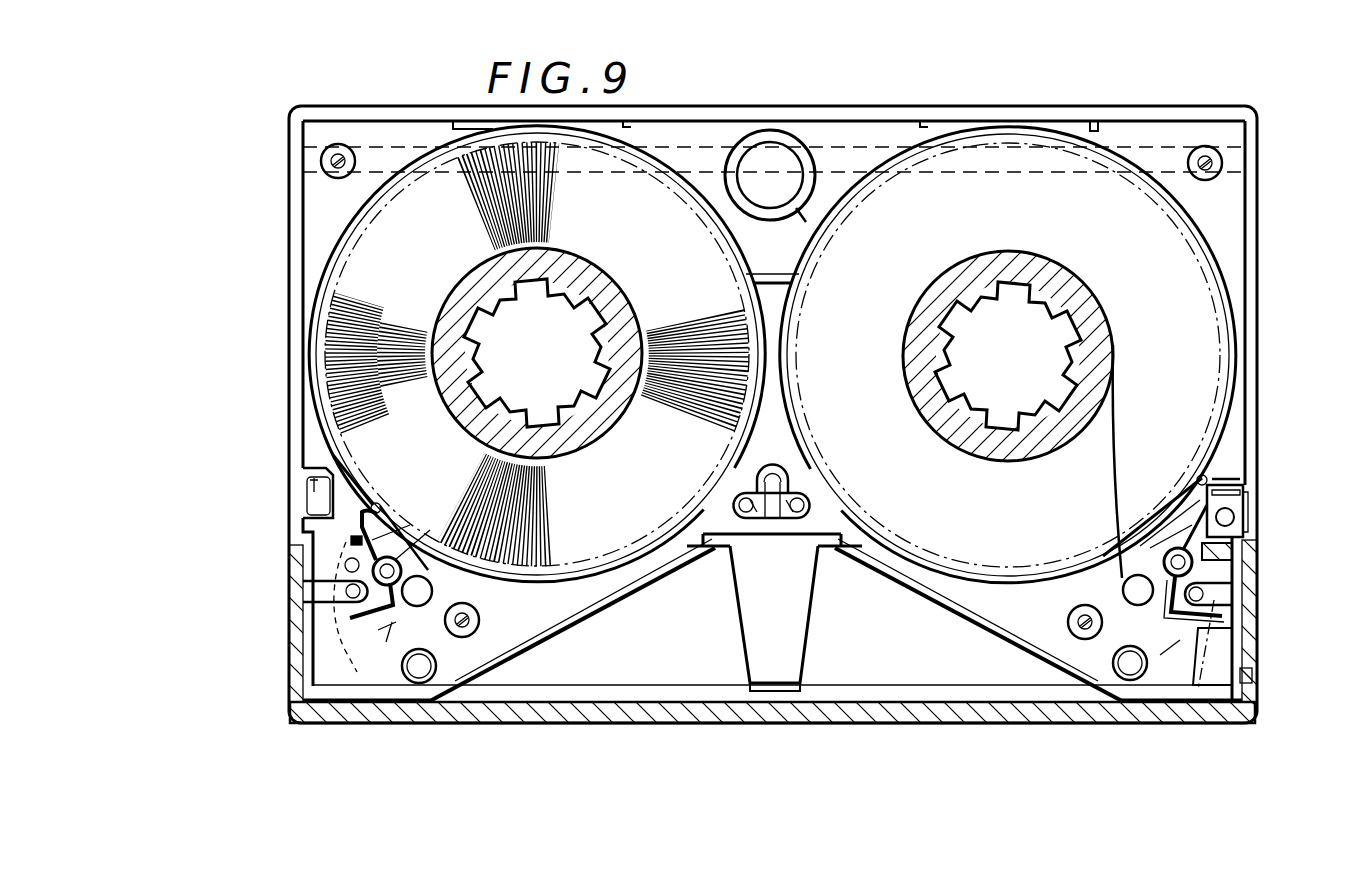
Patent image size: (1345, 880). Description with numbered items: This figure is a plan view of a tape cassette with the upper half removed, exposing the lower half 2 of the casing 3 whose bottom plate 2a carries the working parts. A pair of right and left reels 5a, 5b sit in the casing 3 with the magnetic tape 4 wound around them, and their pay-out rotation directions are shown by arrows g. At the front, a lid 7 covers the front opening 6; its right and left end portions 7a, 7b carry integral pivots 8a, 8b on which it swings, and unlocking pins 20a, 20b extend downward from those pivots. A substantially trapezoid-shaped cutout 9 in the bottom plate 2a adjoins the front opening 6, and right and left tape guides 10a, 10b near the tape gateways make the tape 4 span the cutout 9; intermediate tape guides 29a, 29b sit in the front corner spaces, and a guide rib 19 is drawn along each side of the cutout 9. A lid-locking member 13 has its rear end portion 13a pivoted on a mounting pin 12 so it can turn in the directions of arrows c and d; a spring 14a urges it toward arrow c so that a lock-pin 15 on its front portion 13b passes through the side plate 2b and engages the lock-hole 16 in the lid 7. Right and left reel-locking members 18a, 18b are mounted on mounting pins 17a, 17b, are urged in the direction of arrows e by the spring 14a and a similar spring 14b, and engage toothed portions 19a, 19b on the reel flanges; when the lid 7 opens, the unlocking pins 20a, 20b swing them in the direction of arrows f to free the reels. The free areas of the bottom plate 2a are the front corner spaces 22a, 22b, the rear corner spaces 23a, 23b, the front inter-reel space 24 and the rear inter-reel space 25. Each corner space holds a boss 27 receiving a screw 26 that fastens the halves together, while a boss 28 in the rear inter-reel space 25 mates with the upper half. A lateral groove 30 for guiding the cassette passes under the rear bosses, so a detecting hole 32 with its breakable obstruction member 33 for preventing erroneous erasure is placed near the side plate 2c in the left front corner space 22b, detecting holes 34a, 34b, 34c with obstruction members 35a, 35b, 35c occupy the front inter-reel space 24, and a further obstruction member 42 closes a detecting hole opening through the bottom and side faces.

The lower half 2 is at (1082, 102).
The bottom plate 2a is at (995, 600).
The side plate 2b is at (1258, 405).
The side plate 2c is at (290, 448).
The casing 3 is at (1268, 293).
The magnetic tape 4 is at (338, 352).
The right reel 5a is at (1055, 290).
The left reel 5b is at (605, 297).
The front opening 6 is at (625, 706).
The lid 7 is at (873, 724).
The right end portion of the lid 7a is at (1247, 667).
The left end portion of the lid 7b is at (292, 668).
The right pivot 8a is at (1236, 592).
The left pivot 8b is at (315, 590).
The cutout 9 is at (783, 700).
The right tape guide 10a is at (1130, 676).
The left tape guide 10b is at (419, 673).
The mounting pin 12 is at (1236, 518).
The lid-locking member 13 is at (1234, 556).
The rear end portion 13a is at (1248, 508).
The front portion 13b is at (1218, 700).
The spring 14a is at (1160, 532).
The spring 14b is at (400, 560).
The lock-pin 15 is at (1252, 683).
The lock-hole 16 is at (1245, 700).
The mounting pin 17a is at (1160, 550).
The mounting pin 17b is at (430, 540).
The right reel-locking member 18a is at (1176, 546).
The left reel-locking member 18b is at (387, 545).
The tape guide rib 19 is at (612, 562).
The toothed portion 19a is at (1168, 536).
The toothed portion 19b is at (376, 522).
The unlocking pin 20a is at (1232, 612).
The unlocking pin 20b is at (364, 652).
The right front corner space 22a is at (1097, 660).
The left front corner space 22b is at (362, 676).
The right rear corner space 23a is at (1234, 228).
The left rear corner space 23b is at (324, 207).
The front inter-reel space 24 is at (735, 525).
The rear inter-reel space 25 is at (806, 200).
The screw 26 is at (338, 158).
The boss 27 is at (352, 152).
The boss 28 is at (812, 205).
The intermediate tape guide 29a is at (1126, 586).
The intermediate tape guide 29b is at (432, 591).
The lateral groove 30 is at (848, 148).
The detecting hole 32 is at (318, 470).
The obstruction member 33 is at (303, 497).
The detecting hole 34a is at (810, 505).
The detecting hole 34b is at (776, 470).
The detecting hole 34c is at (740, 500).
The obstruction member 35a is at (797, 520).
The obstruction member 35b is at (772, 520).
The obstruction member 35c is at (753, 520).
The obstruction member 42 is at (1242, 482).
The arrows g is at (347, 290).
The arrows e is at (368, 498).
The arrows f is at (778, 648).
The arrow c is at (1210, 700).
The arrow d is at (1183, 662).